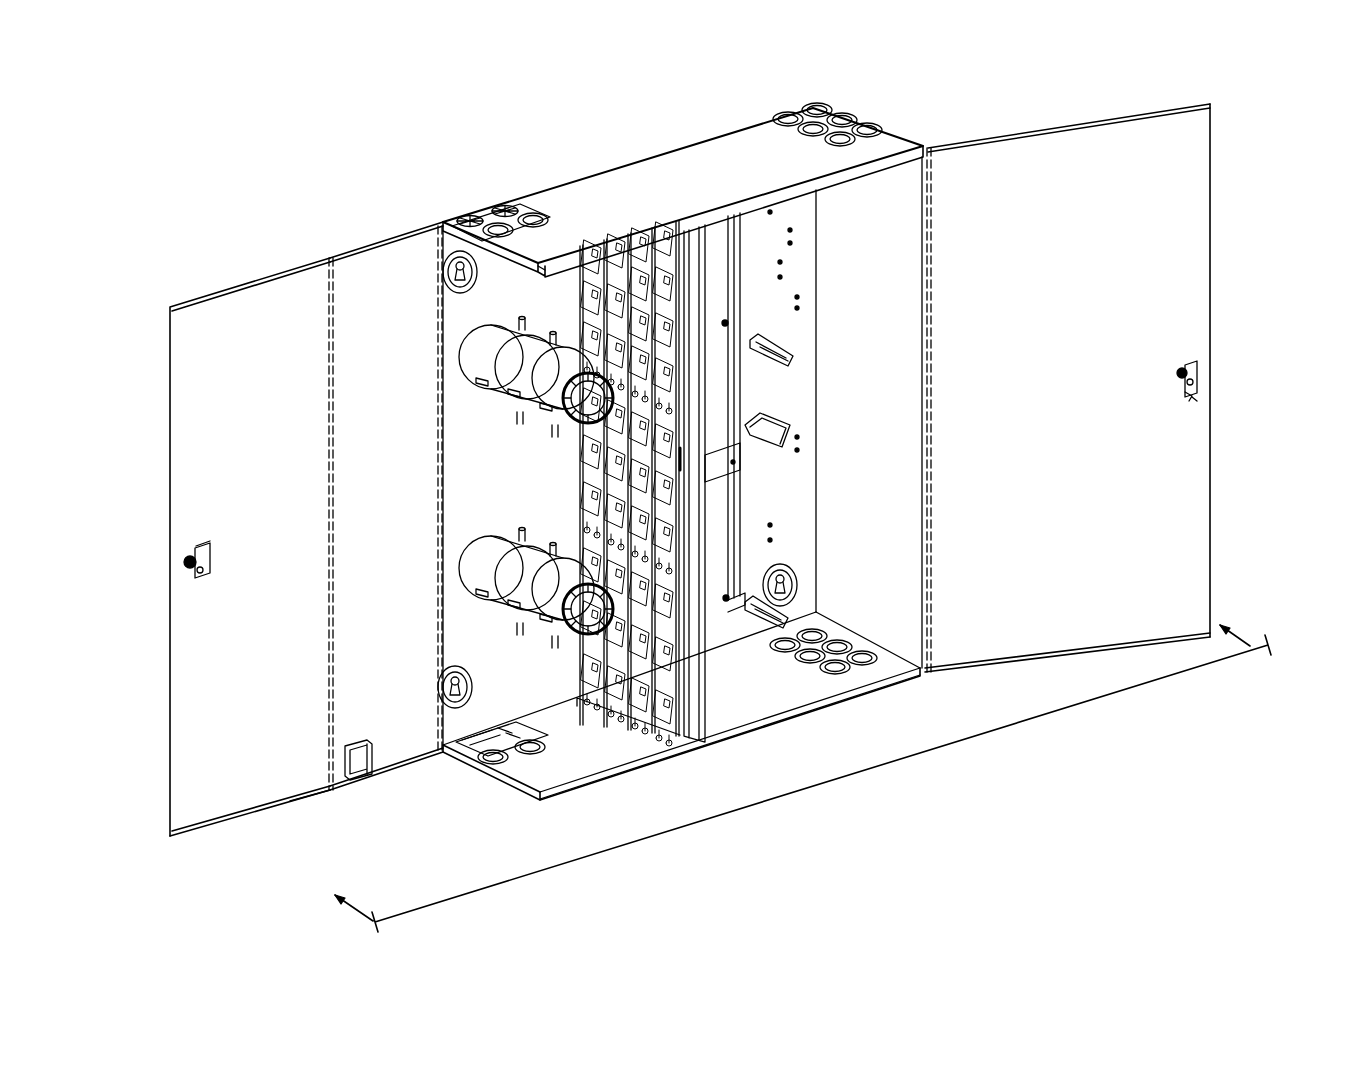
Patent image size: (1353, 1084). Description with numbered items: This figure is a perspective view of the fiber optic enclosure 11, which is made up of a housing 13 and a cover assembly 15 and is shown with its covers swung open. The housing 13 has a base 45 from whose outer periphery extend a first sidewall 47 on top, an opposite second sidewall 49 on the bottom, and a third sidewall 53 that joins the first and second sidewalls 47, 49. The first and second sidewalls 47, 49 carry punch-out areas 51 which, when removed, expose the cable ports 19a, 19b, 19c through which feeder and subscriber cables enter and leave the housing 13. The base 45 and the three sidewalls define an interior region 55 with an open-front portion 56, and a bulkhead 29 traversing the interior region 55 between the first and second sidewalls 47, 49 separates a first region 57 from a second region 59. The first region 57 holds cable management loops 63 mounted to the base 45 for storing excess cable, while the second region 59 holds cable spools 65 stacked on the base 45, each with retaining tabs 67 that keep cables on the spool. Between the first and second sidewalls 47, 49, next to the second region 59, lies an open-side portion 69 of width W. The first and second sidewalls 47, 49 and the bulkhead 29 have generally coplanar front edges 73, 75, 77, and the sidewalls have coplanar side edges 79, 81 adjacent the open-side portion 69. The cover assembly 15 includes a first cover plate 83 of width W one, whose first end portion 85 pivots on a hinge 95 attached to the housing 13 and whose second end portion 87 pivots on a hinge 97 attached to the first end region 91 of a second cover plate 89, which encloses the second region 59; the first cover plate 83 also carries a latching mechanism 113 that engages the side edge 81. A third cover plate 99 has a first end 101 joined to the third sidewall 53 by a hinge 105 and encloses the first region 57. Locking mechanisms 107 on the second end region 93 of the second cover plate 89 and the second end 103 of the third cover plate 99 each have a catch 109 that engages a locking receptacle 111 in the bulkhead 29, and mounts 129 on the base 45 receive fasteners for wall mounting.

The fiber optic enclosure 11 is at (277, 180).
The housing 13 is at (645, 160).
The cover assembly 15 is at (318, 828).
The cable port 19a is at (880, 660).
The cable port 19b is at (535, 757).
The cable port 19c is at (835, 672).
The bulkhead 29 is at (705, 695).
The base 45 is at (548, 477).
The first sidewall 47 is at (612, 190).
The second sidewall 49 is at (735, 735).
The punch-out areas 51 is at (860, 660).
The third sidewall 53 is at (913, 632).
The interior region 55 is at (900, 195).
The open-front portion 56 is at (768, 678).
The first region 57 is at (752, 218).
The second region 59 is at (565, 280).
The cable management loops 63 is at (785, 358).
The cable spools 65 is at (505, 392).
The retaining tabs 67 is at (525, 330).
The open-side portion 69 is at (488, 262).
The front edge 73 is at (645, 240).
The front edge 75 is at (652, 755).
The front edge 77 is at (705, 404).
The side edge 79 is at (520, 262).
The side edge 81 is at (494, 782).
The first cover plate 83 is at (370, 785).
The first end portion 85 is at (420, 760).
The second end portion 87 is at (304, 500).
The second cover plate 89 is at (245, 285).
The first end region 91 is at (313, 777).
The second end region 93 is at (177, 810).
The hinge 95 is at (437, 708).
The hinge 97 is at (338, 625).
The third cover plate 99 is at (1213, 243).
The first end 101 is at (960, 163).
The second end 103 is at (1200, 138).
The hinge 105 is at (932, 296).
The locking mechanisms 107 is at (1187, 370).
The catch 109 is at (1195, 405).
The locking receptacle 111 is at (688, 455).
The latching mechanism 113 is at (343, 757).
The mounts 129 is at (447, 270).